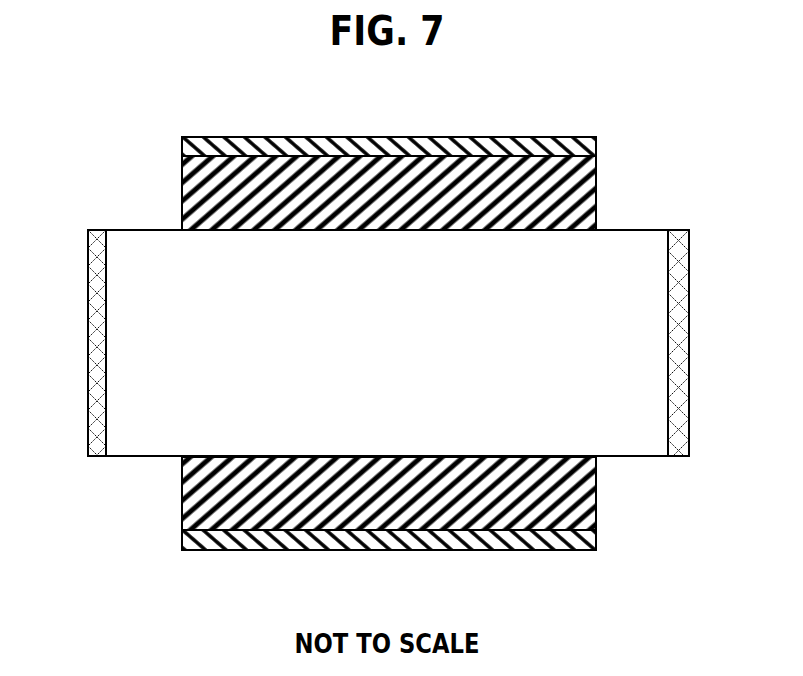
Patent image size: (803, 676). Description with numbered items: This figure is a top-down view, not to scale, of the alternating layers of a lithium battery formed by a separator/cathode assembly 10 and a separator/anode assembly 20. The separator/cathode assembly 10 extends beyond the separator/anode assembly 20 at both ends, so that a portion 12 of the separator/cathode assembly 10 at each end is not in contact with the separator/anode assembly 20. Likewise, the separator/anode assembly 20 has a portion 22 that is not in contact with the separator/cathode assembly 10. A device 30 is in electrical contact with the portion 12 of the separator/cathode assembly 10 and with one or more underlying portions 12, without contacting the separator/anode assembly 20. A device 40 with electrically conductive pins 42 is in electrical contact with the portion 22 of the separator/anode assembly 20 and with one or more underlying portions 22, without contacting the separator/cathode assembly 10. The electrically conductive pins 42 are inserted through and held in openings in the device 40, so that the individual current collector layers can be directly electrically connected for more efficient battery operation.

The separator/cathode assembly 10 is at (143, 437).
The portion of the separator/cathode assembly 12 is at (88, 229).
The separator/anode assembly 20 is at (596, 173).
The portion of the separator/anode assembly 22 is at (598, 457).
The device 30 is at (88, 417).
The device 40 is at (482, 137).
The electrically conductive pins 42 is at (182, 495).